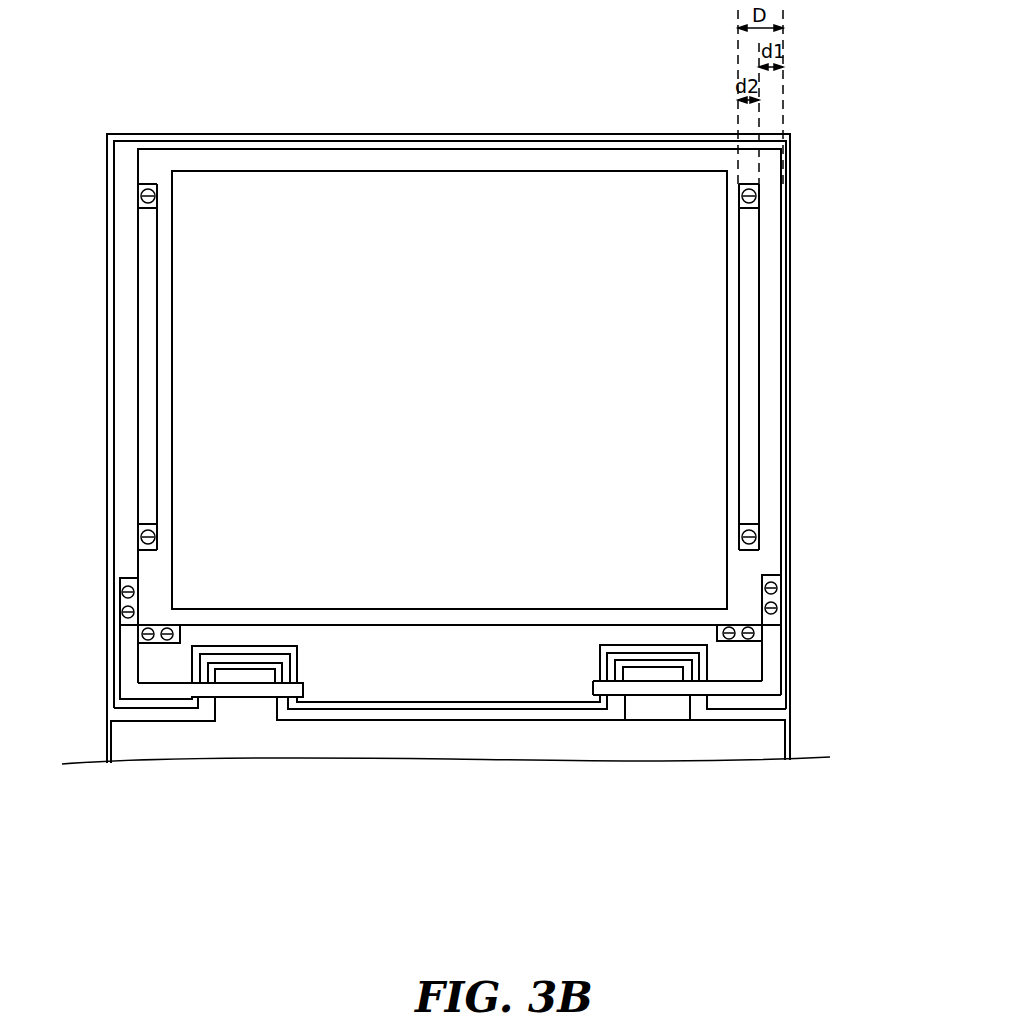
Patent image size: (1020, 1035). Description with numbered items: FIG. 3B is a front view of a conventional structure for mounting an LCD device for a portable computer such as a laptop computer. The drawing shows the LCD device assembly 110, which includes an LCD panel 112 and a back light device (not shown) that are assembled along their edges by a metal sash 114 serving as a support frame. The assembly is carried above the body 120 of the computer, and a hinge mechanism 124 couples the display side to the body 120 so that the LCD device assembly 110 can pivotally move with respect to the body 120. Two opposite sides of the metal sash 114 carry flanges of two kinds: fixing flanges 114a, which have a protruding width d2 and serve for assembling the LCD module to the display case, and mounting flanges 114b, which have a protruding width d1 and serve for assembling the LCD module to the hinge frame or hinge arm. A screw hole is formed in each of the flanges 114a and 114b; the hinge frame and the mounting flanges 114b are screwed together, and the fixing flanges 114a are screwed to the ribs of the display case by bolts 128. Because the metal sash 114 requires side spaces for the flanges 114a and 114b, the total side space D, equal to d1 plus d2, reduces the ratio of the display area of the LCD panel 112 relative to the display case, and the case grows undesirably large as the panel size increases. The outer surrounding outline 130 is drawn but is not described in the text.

The LCD device assembly 110 is at (771, 284).
The LCD panel 112 is at (530, 197).
The metal sash 114 is at (622, 160).
The fixing flange 114a is at (760, 525).
The mounting flange 114b is at (744, 640).
The body 120 is at (792, 738).
The hinge mechanism 124 is at (238, 712).
The bolts 128 is at (758, 192).
The display cover 130 is at (792, 397).